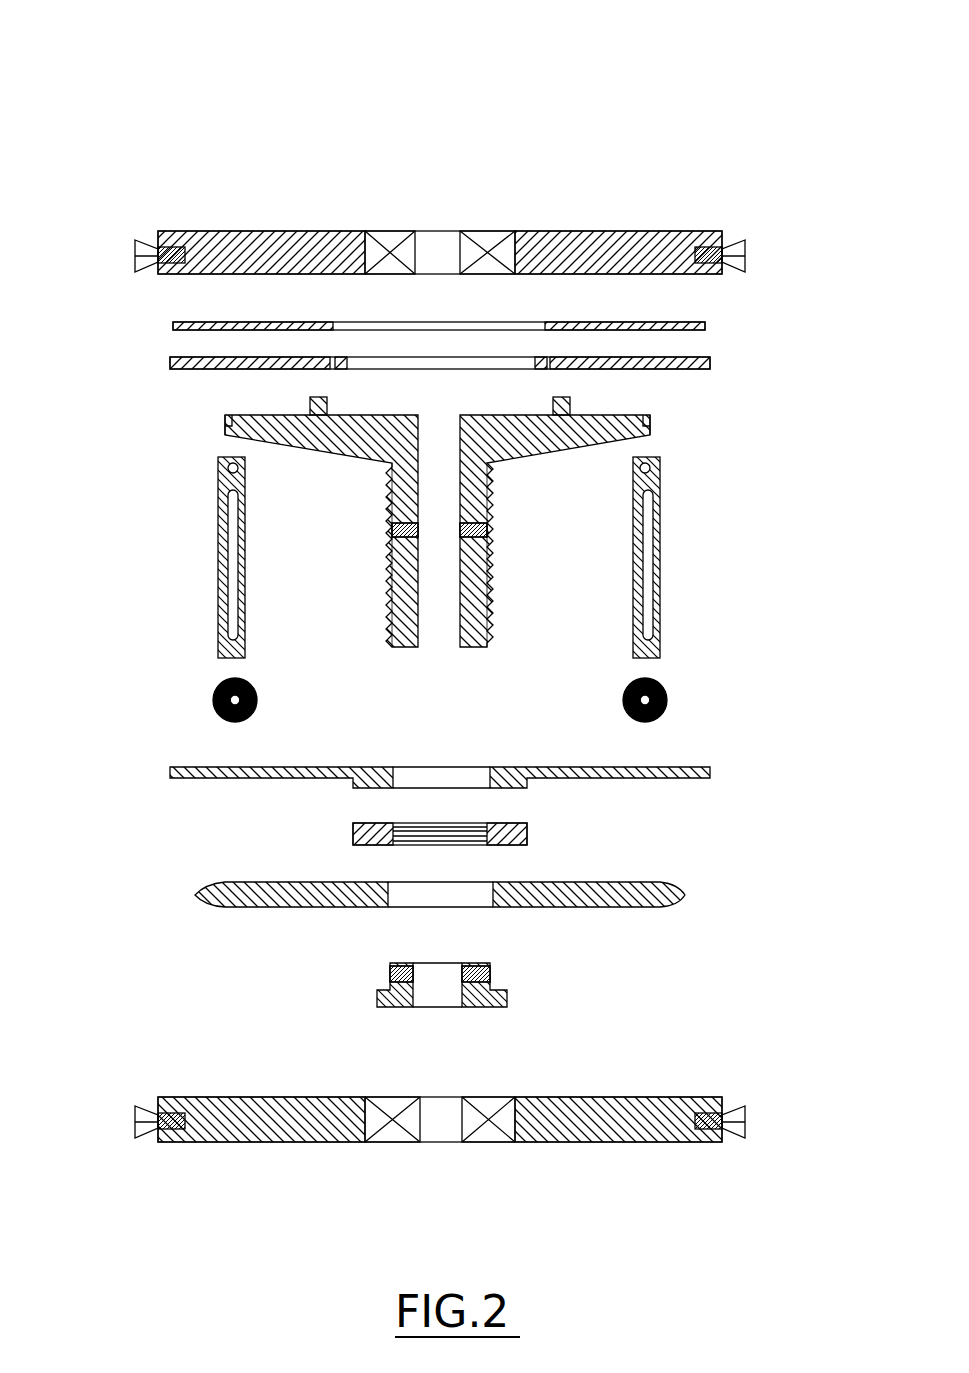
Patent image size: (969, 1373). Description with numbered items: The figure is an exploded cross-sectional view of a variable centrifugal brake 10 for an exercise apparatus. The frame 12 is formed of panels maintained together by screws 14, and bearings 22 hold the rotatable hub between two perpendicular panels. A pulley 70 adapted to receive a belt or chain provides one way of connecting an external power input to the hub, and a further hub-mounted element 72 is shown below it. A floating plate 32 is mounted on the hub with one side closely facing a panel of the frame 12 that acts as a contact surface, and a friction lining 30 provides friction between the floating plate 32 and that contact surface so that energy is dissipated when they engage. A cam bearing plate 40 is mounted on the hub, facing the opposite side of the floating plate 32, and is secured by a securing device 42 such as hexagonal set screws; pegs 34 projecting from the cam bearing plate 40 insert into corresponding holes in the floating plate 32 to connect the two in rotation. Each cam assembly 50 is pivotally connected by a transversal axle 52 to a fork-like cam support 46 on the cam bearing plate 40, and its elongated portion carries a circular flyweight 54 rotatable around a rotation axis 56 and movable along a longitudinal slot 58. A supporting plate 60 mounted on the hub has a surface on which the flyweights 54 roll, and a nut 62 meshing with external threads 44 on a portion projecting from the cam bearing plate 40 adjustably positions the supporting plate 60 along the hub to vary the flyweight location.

The variable centrifugal brake 10 is at (268, 52).
The frame 12 is at (592, 234).
The screws 14 is at (132, 252).
The bearings 22 is at (398, 232).
The friction lining 30 is at (705, 327).
The floating plate 32 is at (710, 369).
The pegs 34 is at (328, 403).
The cam bearing plate 40 is at (516, 466).
The securing device 42 is at (392, 530).
The external threads 44 is at (392, 598).
The cam support 46 is at (226, 425).
The cam assembly 50 is at (200, 560).
The transversal axle 52 is at (220, 466).
The flyweight 54 is at (213, 698).
The rotation axis 56 is at (252, 690).
The slot 58 is at (218, 640).
The supporting plate 60 is at (704, 778).
The nut 62 is at (527, 834).
The pulley 70 is at (196, 896).
The bushing 72 is at (378, 998).